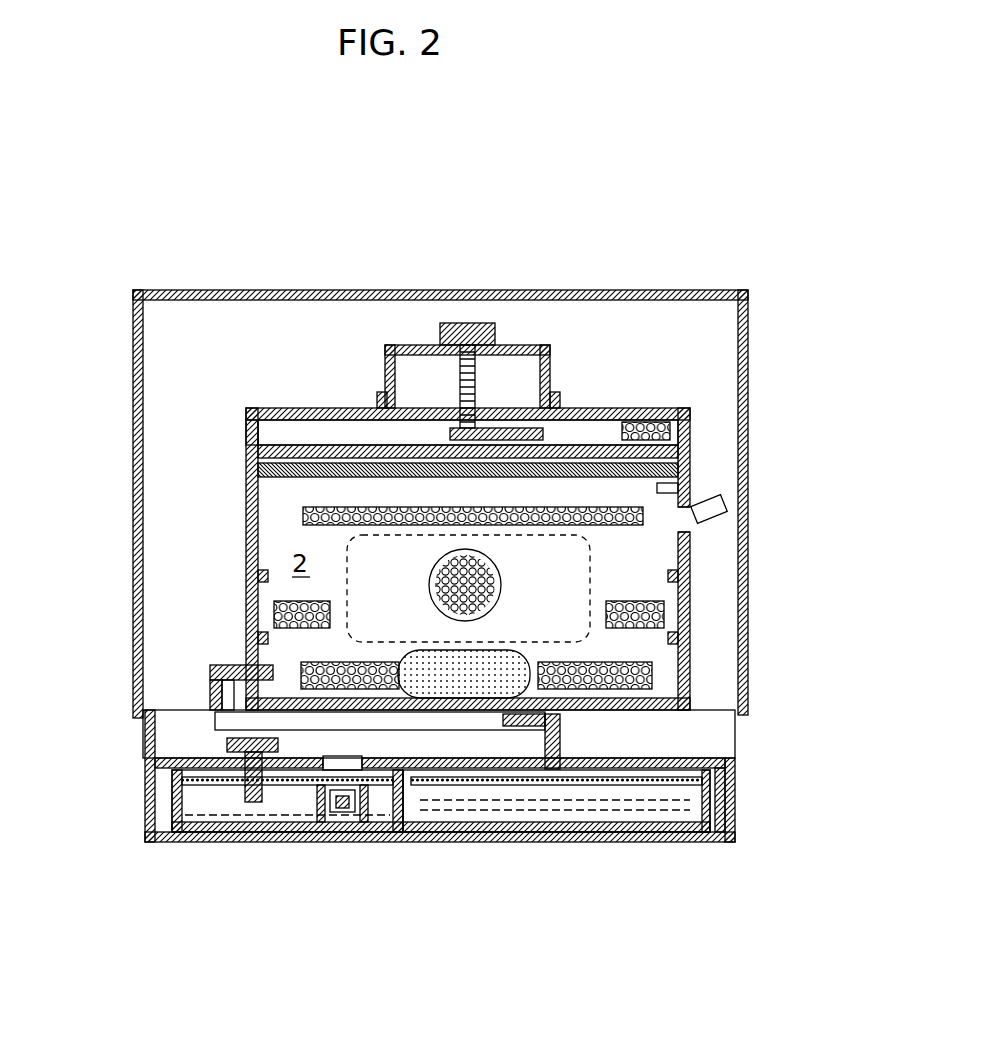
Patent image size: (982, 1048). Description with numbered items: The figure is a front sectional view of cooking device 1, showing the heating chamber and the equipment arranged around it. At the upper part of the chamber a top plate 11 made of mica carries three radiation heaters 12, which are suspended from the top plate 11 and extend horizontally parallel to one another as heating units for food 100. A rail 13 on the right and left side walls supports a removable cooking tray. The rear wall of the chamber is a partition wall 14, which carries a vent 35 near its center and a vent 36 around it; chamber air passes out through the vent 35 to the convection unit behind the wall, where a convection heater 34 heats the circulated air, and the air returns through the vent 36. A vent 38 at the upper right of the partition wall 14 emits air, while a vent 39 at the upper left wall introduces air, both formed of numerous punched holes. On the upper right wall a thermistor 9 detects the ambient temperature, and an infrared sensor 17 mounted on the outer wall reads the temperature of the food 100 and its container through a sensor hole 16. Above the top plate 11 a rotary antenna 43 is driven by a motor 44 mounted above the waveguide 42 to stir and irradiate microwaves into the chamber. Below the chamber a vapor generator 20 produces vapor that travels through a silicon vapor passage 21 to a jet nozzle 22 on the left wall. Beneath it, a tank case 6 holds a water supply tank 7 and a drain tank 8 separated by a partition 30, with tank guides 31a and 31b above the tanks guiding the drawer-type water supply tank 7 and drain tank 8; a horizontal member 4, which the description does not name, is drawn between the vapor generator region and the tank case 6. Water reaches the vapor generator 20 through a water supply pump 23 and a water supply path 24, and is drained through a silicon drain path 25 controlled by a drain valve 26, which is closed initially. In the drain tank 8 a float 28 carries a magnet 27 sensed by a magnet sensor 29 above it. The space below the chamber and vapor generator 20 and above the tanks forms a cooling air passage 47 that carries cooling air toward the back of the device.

The cooking device 1 is at (625, 212).
The frame 4 is at (735, 760).
The tank case 6 is at (145, 822).
The water supply tank 7 is at (663, 845).
The drain tank 8 is at (208, 845).
The thermistor 9 is at (680, 488).
The top plate 11 is at (258, 450).
The radiation heaters 12 is at (258, 468).
The rail 13 is at (686, 584).
The partition wall 14 is at (363, 493).
The sensor hole 16 is at (690, 520).
The infrared sensor 17 is at (726, 510).
The vapor generator 20 is at (218, 722).
The vapor passage 21 is at (212, 690).
The jet nozzle 22 is at (250, 660).
The water supply pump 23 is at (572, 845).
The water supply path 24 is at (513, 845).
The drain path 25 is at (255, 845).
The drain valve 26 is at (232, 745).
The magnet 27 is at (345, 845).
The float 28 is at (355, 845).
The magnet sensor 29 is at (320, 845).
The partition 30 is at (400, 845).
The tank guide 31a is at (712, 780).
The tank guide 31b is at (180, 777).
The convection heater 34 is at (680, 576).
The vent 35 is at (440, 565).
The vent 36 is at (305, 668).
The vent 38 is at (670, 425).
The vent 39 is at (250, 423).
The waveguide 42 is at (423, 370).
The rotary antenna 43 is at (545, 430).
The motor 44 is at (467, 322).
The cooling air passage 47 is at (665, 728).
The food 100 is at (532, 680).